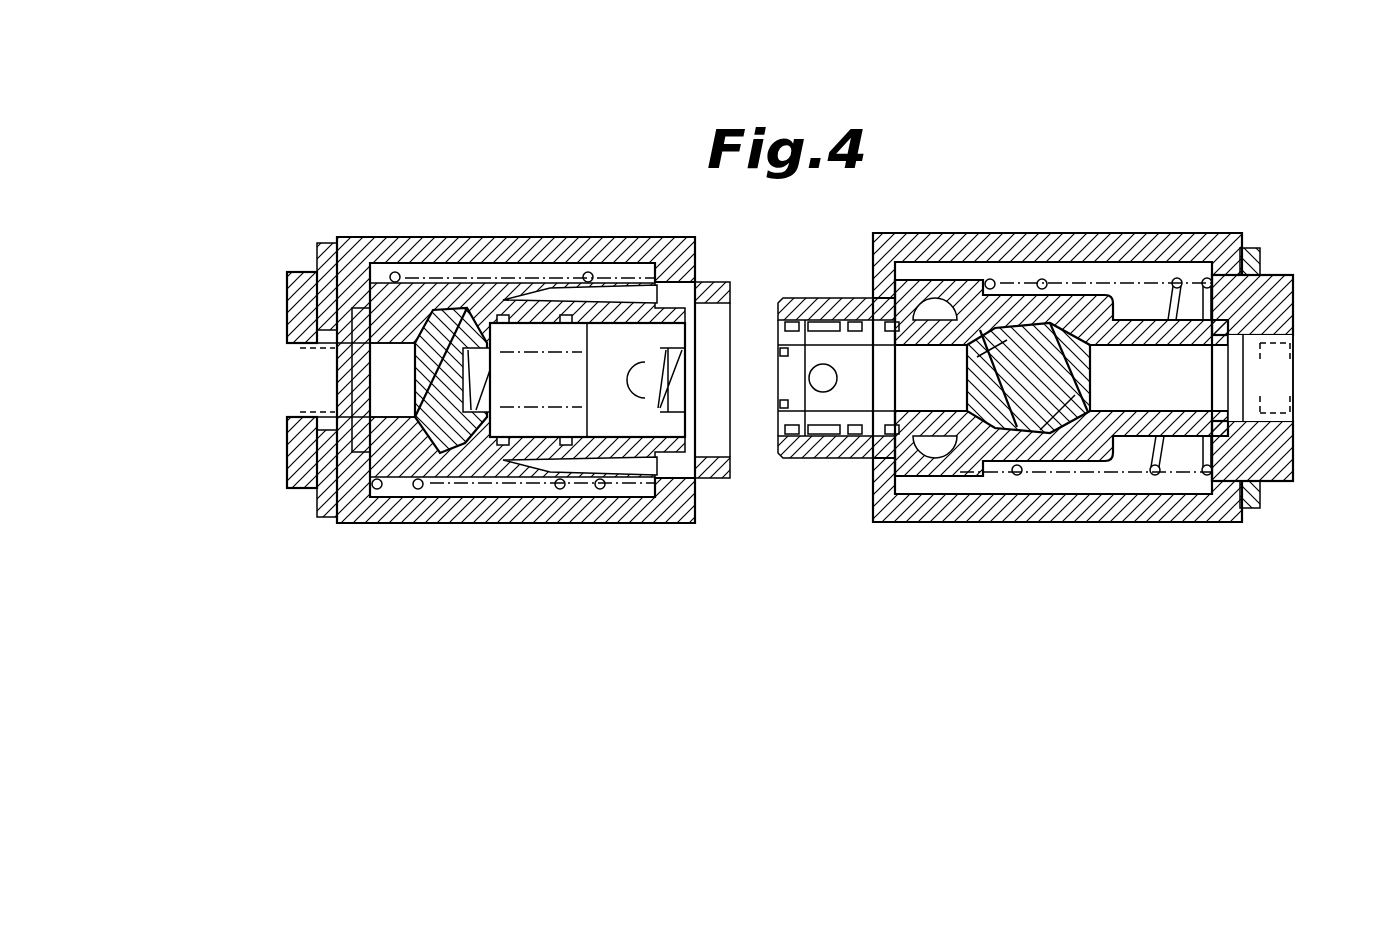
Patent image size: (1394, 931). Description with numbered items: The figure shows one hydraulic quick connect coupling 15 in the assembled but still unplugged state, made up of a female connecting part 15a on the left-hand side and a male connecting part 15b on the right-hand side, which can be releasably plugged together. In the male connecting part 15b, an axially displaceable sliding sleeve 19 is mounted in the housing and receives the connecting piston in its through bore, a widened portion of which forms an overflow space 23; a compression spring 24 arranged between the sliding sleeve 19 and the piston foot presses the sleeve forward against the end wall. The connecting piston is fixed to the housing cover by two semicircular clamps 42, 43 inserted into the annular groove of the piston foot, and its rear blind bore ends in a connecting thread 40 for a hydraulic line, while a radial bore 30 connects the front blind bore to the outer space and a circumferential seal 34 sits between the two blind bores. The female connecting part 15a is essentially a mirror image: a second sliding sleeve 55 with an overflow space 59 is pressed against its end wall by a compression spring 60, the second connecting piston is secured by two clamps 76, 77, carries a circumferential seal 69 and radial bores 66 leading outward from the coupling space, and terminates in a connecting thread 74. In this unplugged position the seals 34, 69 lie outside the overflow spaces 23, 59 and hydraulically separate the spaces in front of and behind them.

The hydraulic coupling 15 is at (247, 360).
The female connecting part 15a is at (438, 208).
The male connecting part 15b is at (1070, 215).
The clamp 77 is at (313, 245).
The compression spring 60 is at (390, 280).
The overflow space 59 is at (523, 287).
The second sliding sleeve 55 is at (565, 292).
The sliding sleeve 19 is at (965, 285).
The compression spring 24 is at (1177, 283).
The semicircular clamp 43 is at (1249, 257).
The connecting thread 74 is at (298, 432).
The clamp 76 is at (328, 508).
The circumferential seal 69 is at (483, 467).
The radial bores 66 is at (645, 382).
The radial bore 30 is at (823, 392).
The overflow space 23 is at (938, 444).
The circumferential seal 34 is at (1043, 432).
The semicircular clamp 42 is at (1253, 495).
The connecting thread 40 is at (1283, 424).